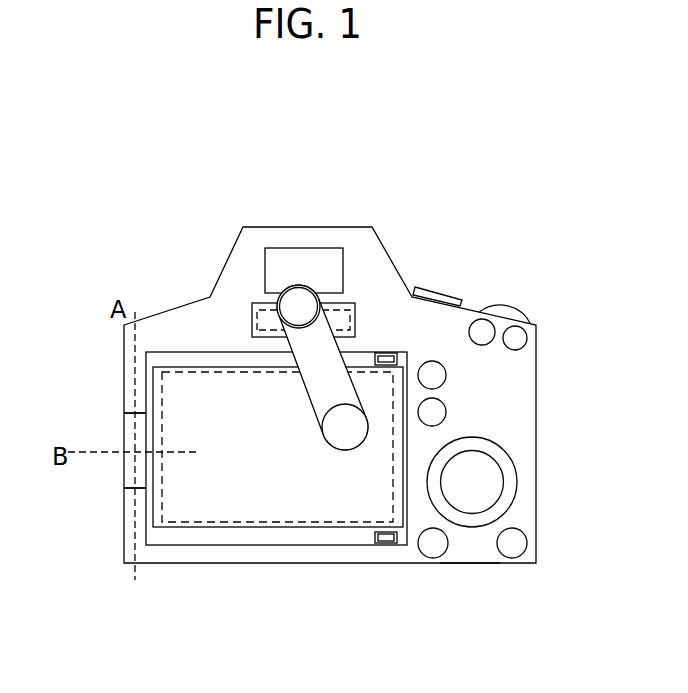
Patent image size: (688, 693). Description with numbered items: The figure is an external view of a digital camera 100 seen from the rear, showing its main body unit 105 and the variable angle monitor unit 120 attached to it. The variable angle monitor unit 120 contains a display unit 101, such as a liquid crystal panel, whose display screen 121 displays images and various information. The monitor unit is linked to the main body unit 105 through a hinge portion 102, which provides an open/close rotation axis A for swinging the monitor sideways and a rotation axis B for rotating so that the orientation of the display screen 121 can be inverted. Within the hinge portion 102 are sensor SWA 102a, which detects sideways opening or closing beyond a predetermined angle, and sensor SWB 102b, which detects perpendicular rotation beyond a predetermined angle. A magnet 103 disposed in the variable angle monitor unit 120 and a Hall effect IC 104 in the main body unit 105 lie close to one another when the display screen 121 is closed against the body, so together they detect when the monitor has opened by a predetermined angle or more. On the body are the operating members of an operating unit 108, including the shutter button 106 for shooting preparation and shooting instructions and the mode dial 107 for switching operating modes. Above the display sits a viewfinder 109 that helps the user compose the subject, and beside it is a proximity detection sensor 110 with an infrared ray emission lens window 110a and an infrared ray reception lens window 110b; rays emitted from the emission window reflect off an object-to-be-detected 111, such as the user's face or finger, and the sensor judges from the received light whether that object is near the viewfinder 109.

The digital camera 100 is at (322, 565).
The display unit 101 is at (208, 525).
The hinge portion 102 is at (130, 438).
The sensor SWA 102a is at (130, 416).
The sensor SWB 102b is at (130, 473).
The magnet 103 is at (383, 538).
The Hall effect IC 104 is at (385, 360).
The main body unit 105 is at (467, 565).
The shutter button 106 is at (527, 314).
The mode dial 107 is at (443, 295).
The operating unit 108 is at (517, 337).
The viewfinder 109 is at (337, 268).
The proximity detection sensor 110 is at (260, 308).
The infrared ray emission lens window 110a is at (265, 318).
The infrared ray reception lens window 110b is at (348, 306).
The object-to-be-detected 111 is at (292, 350).
The variable angle monitor unit 120 is at (162, 538).
The display screen 121 is at (338, 522).